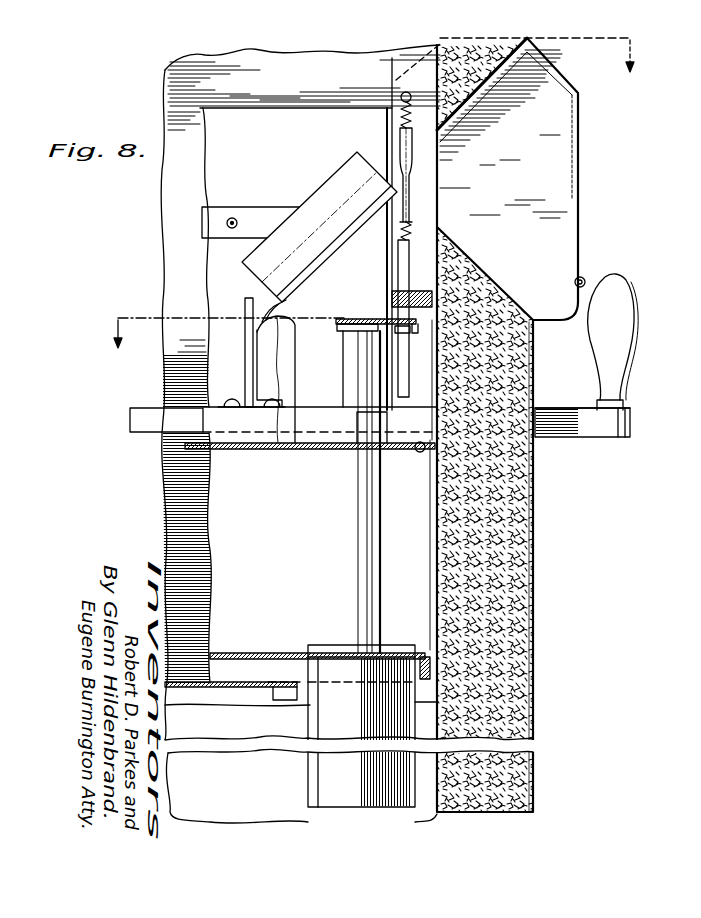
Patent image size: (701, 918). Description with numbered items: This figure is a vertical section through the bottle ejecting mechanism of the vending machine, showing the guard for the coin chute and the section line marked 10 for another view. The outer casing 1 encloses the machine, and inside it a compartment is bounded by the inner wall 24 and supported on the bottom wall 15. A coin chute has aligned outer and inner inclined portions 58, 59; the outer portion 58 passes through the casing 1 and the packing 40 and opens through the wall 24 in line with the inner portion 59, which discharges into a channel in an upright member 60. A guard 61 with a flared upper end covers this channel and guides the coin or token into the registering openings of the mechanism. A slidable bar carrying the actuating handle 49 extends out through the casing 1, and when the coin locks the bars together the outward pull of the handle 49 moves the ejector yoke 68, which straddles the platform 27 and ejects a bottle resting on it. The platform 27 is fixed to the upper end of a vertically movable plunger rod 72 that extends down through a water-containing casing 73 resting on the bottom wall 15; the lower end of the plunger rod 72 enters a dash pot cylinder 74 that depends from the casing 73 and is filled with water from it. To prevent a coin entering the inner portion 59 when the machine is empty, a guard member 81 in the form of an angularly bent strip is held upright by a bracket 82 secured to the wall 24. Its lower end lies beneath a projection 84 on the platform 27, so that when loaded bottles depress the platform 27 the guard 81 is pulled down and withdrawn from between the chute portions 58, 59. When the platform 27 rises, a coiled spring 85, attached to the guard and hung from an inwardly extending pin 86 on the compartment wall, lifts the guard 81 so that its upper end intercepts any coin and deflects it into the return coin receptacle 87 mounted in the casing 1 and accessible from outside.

The casing 1 is at (533, 741).
The section line 10 is at (376, 193).
The bottom wall 15 is at (217, 641).
The wall 24 is at (432, 556).
The platform 27 is at (357, 318).
The packing 40 is at (535, 590).
The actuating handle 49 is at (148, 412).
The outer inclined portion of coin chute 58 is at (487, 95).
The inner inclined portion of coin chute 59 is at (322, 257).
The upright member 60 is at (246, 340).
The guard 61 is at (257, 365).
The ejector yoke 68 is at (289, 345).
The plunger rod 72 is at (357, 568).
The casing 73 is at (310, 488).
The dash pot cylinder 74 is at (325, 781).
The guard member 81 is at (412, 165).
The bracket 82 is at (420, 298).
The projection 84 is at (414, 333).
The coiled spring 85 is at (398, 112).
The pin 86 is at (403, 92).
The return coin receptacle 87 is at (580, 173).